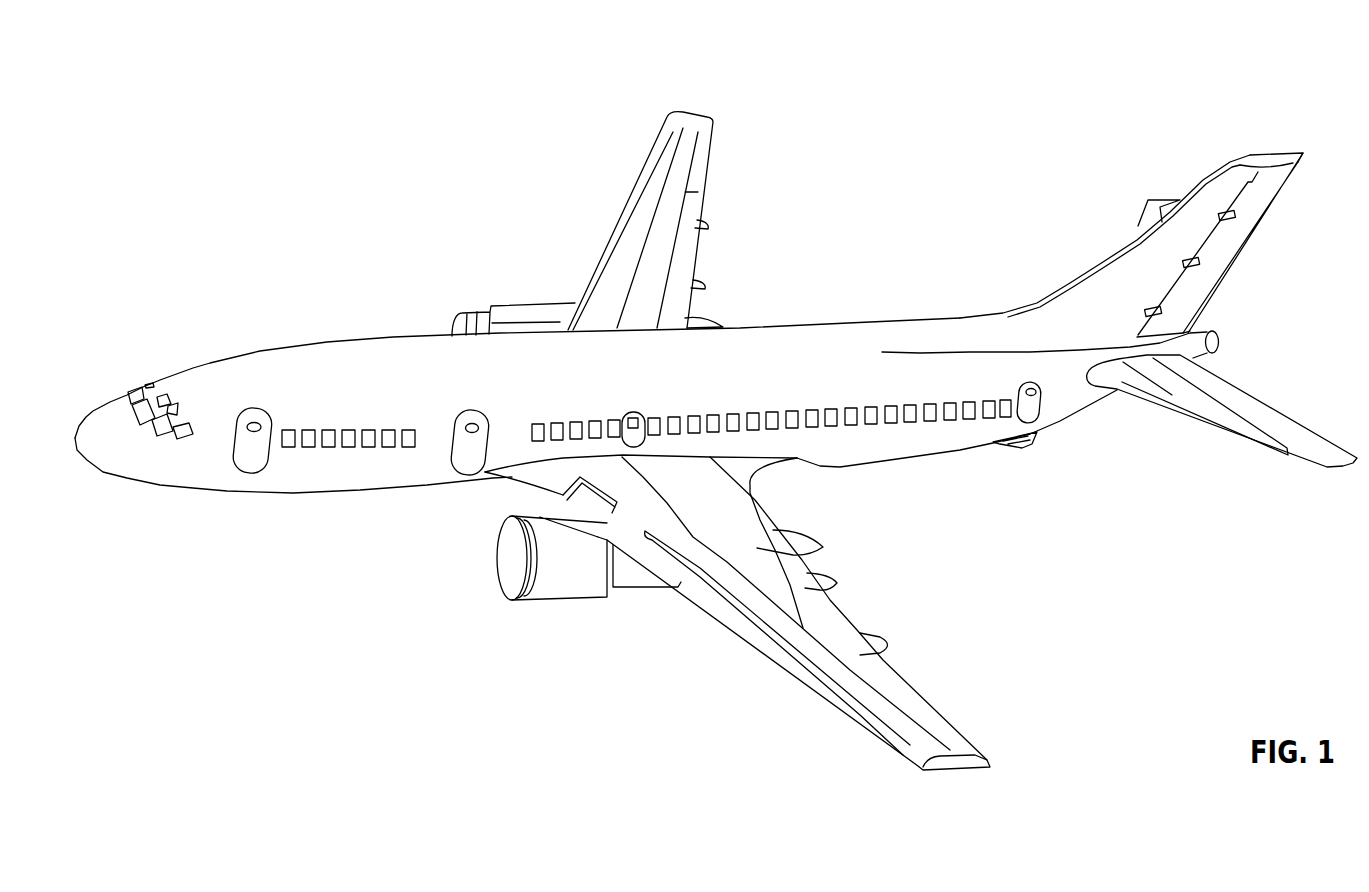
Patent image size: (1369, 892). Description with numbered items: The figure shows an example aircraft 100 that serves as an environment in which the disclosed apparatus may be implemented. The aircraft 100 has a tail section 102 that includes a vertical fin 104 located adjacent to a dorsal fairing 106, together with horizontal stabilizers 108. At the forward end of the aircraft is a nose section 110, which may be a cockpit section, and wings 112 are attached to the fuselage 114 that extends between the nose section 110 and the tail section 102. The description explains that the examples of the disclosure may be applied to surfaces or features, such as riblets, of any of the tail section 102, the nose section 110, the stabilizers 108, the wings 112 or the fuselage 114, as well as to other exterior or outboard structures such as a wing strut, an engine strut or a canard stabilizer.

The aircraft 100 is at (290, 161).
The tail section 102 is at (1213, 110).
The vertical fin 104 is at (1157, 255).
The dorsal fairing 106 is at (1013, 325).
The horizontal stabilizers 108 is at (1257, 447).
The nose section 110 is at (105, 447).
The wings 112 is at (756, 629).
The fuselage 114 is at (438, 363).